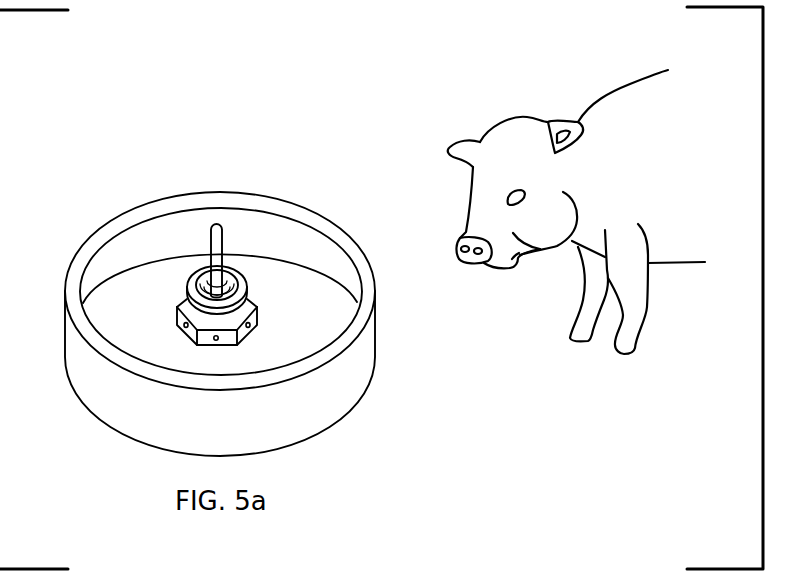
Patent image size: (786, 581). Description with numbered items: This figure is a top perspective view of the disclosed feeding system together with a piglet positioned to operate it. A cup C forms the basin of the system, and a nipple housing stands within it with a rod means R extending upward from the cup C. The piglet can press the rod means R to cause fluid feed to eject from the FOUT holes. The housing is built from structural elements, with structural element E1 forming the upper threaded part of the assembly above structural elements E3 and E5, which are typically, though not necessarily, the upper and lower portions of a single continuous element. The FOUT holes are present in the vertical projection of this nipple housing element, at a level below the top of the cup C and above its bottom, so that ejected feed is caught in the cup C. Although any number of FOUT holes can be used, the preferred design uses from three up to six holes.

The cup C is at (88, 217).
The rod means R is at (226, 241).
The structural element E1 is at (249, 287).
The structural element E3 is at (327, 358).
The structural element E5 is at (253, 331).
The FOUT holes FOUT is at (176, 318).